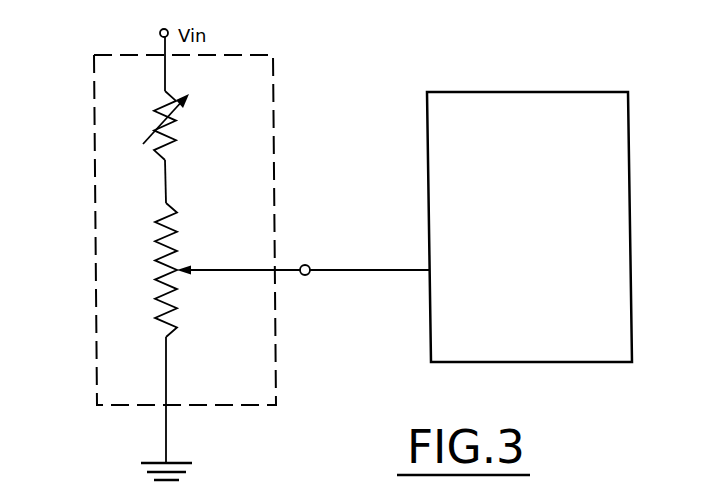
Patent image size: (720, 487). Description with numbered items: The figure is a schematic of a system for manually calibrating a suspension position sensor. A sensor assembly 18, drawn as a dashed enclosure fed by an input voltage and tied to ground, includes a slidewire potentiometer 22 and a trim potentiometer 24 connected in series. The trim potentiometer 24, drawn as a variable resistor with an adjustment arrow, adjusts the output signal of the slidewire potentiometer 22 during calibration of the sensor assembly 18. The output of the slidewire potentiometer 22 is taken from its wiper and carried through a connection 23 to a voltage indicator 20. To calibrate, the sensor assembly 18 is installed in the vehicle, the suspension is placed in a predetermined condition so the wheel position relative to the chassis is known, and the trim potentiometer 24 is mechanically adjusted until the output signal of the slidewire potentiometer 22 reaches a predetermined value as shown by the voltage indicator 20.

The sensor assembly 18 is at (94, 121).
The voltage indicator 20 is at (632, 216).
The slidewire potentiometer 22 is at (156, 218).
The wiper tap connection 23 is at (282, 270).
The trim potentiometer 24 is at (176, 140).